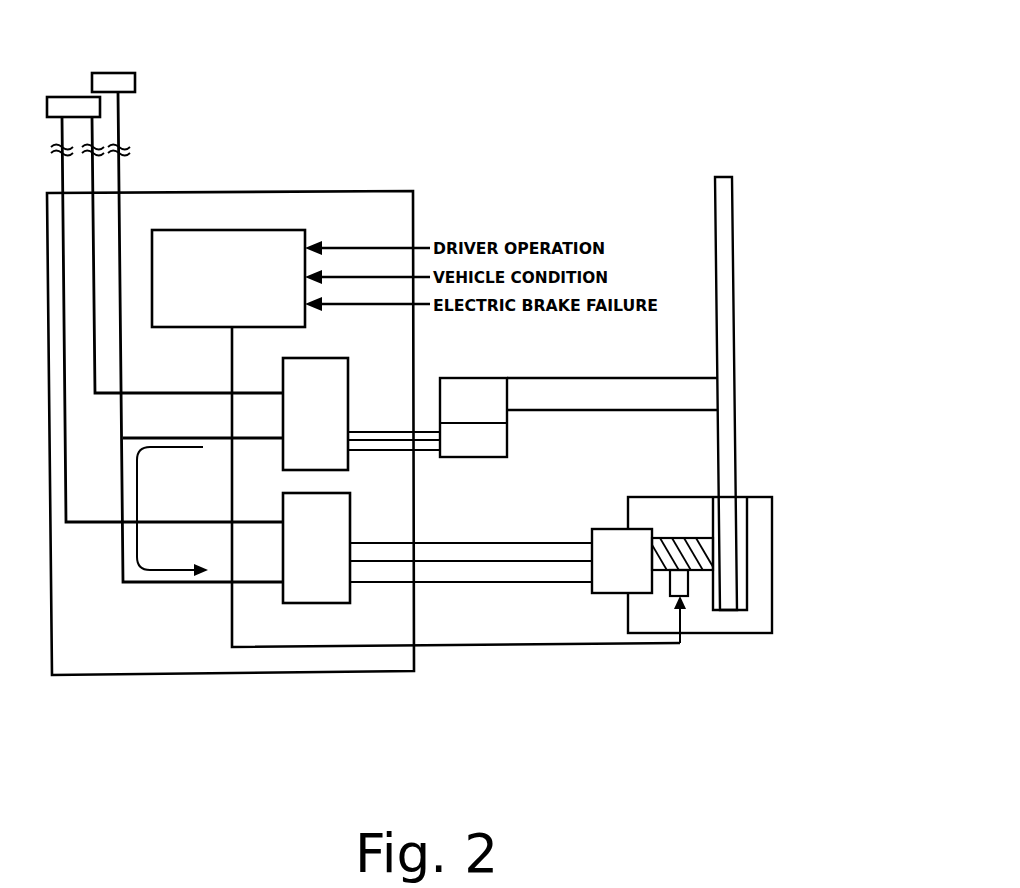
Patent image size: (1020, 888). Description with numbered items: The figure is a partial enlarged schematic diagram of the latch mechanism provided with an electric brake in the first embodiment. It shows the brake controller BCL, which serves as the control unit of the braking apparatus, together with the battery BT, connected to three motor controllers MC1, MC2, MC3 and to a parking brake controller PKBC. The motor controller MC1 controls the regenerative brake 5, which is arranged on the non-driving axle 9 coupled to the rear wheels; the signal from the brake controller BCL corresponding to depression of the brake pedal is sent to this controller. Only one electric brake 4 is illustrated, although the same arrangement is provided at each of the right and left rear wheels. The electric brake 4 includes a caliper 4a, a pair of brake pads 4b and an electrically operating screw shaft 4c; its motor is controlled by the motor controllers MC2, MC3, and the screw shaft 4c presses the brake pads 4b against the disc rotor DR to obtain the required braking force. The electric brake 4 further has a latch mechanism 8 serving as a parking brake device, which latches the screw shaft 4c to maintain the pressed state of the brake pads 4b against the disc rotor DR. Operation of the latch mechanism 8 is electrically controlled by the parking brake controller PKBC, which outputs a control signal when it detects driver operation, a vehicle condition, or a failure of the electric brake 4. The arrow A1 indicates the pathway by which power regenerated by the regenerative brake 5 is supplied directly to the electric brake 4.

The brake controller BCL is at (73, 97).
The battery BT is at (118, 73).
The parking brake controller PKBC is at (237, 245).
The motor controller MC1 is at (348, 383).
The motor controller MC2 is at (437, 608).
The motor controller MC3 is at (327, 604).
The arrow A1 is at (137, 488).
The regenerative brake 5 is at (507, 437).
The non-driving axle 9 is at (596, 413).
The disc rotor DR is at (733, 212).
The electric brake 4 is at (598, 514).
The caliper 4a is at (772, 577).
The brake pads 4b is at (718, 543).
The electrically operating screw shaft 4c is at (680, 538).
The latch mechanism 8 is at (693, 590).